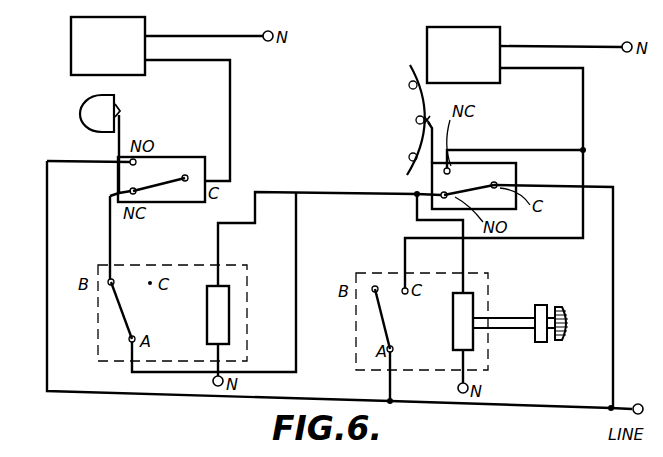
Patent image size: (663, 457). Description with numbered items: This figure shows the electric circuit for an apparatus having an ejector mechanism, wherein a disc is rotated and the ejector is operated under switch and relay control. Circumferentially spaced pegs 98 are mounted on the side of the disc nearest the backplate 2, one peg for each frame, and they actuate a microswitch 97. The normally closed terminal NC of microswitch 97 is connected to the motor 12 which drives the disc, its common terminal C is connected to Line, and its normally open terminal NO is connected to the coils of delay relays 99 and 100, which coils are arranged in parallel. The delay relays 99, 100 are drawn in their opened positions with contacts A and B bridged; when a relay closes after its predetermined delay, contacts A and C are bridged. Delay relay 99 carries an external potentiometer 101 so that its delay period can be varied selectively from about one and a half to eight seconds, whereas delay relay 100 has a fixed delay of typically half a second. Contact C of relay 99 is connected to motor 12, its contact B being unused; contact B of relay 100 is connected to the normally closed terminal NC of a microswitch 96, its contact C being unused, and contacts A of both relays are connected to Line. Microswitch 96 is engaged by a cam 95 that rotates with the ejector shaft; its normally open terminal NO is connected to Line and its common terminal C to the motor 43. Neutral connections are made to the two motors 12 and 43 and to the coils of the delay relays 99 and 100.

The motor 43 is at (80, 55).
The cam 95 is at (88, 113).
The microswitch 96 is at (180, 158).
The delay relay 100 is at (247, 337).
The motor 12 is at (437, 53).
The backplate 2 is at (410, 68).
The pegs 98 is at (416, 120).
The microswitch 97 is at (478, 168).
The delay relay 99 is at (488, 342).
The external potentiometer 101 is at (545, 340).